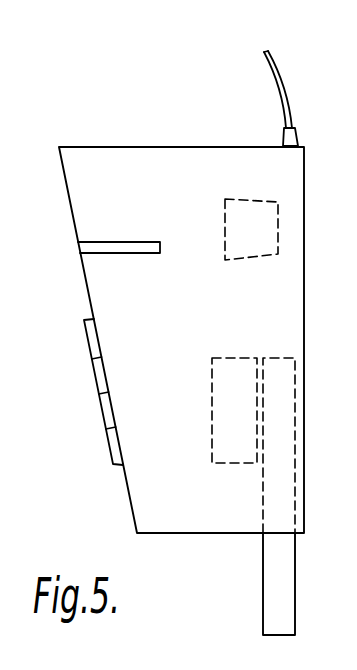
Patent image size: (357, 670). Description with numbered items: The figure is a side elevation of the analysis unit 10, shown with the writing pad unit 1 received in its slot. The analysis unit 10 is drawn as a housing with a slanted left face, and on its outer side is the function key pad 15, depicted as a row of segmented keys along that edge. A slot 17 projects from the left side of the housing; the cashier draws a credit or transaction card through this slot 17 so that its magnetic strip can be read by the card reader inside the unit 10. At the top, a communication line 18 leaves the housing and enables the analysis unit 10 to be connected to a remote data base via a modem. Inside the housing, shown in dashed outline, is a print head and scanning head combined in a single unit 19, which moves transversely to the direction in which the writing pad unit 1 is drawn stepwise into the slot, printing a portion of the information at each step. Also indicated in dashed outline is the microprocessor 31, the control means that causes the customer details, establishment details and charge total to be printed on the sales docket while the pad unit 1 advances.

The writing pad unit 1 is at (270, 611).
The analysis unit 10 is at (155, 163).
The function key pad 15 is at (100, 419).
The slot 17 is at (88, 247).
The communication line 18 is at (276, 72).
The print head and scanning head unit 19 is at (222, 358).
The microprocessor 31 is at (265, 200).